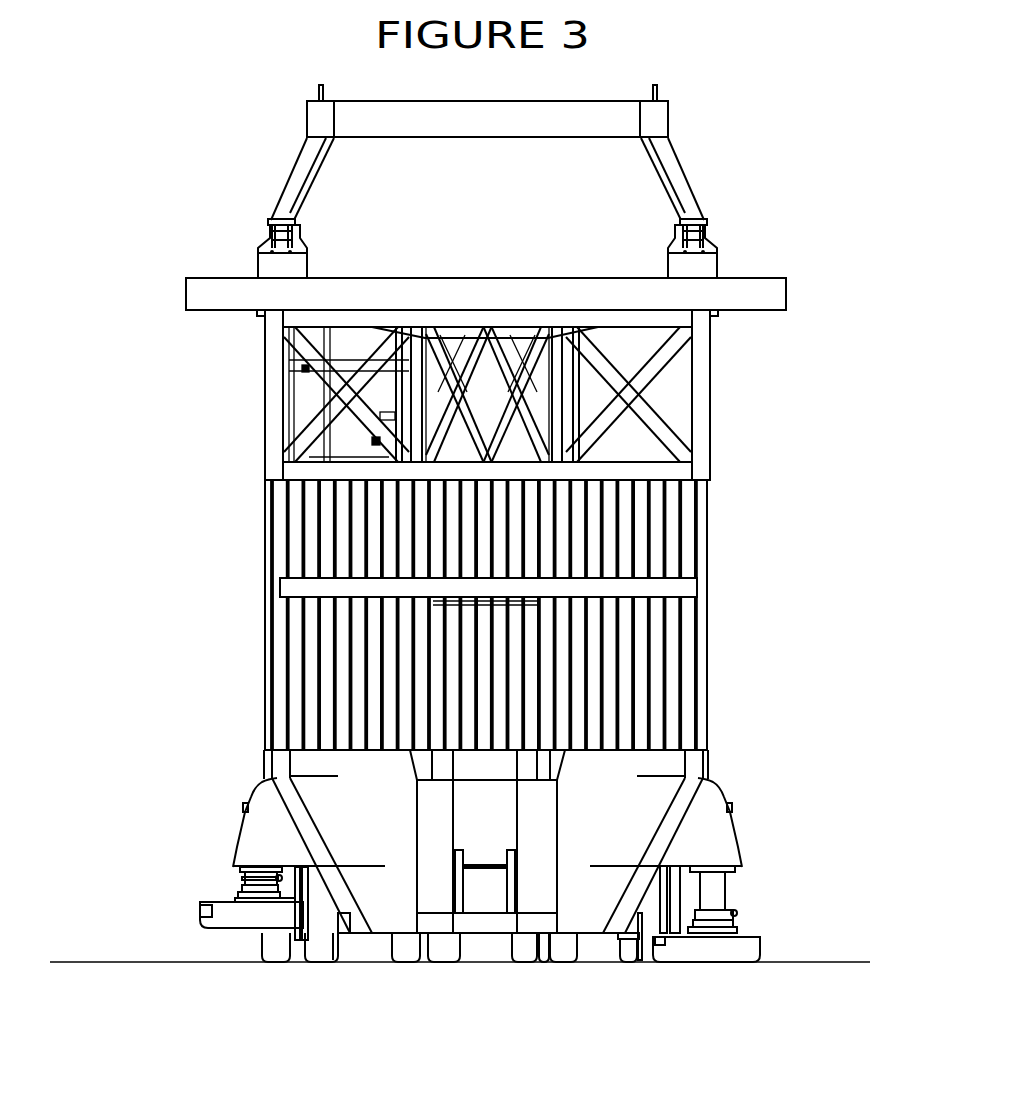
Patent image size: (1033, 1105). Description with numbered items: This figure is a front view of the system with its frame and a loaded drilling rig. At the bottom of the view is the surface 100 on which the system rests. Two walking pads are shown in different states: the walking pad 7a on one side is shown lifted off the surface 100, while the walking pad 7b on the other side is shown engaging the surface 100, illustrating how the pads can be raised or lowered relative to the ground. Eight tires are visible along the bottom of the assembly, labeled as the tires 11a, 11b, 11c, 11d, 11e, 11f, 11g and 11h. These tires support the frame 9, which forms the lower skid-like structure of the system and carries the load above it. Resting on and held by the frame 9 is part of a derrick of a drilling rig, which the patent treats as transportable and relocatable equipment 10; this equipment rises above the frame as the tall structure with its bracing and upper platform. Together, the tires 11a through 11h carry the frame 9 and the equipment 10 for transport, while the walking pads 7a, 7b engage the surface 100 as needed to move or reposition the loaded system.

The transportable and relocatable equipment 10 is at (486, 417).
The frame 9 is at (622, 812).
The walking pad 7a is at (233, 891).
The walking pad 7b is at (697, 990).
The tire 11a is at (244, 973).
The tire 11b is at (286, 988).
The tire 11c is at (372, 973).
The tire 11d is at (411, 988).
The tire 11e is at (490, 973).
The tire 11f is at (528, 988).
The tire 11g is at (605, 973).
The tire 11h is at (693, 898).
The surface 100 is at (460, 933).